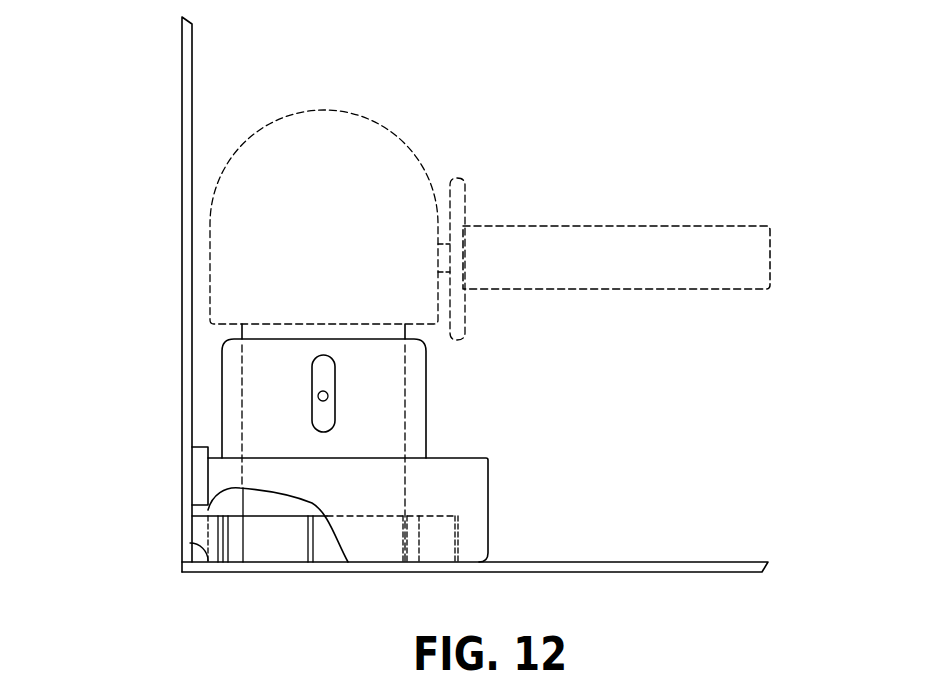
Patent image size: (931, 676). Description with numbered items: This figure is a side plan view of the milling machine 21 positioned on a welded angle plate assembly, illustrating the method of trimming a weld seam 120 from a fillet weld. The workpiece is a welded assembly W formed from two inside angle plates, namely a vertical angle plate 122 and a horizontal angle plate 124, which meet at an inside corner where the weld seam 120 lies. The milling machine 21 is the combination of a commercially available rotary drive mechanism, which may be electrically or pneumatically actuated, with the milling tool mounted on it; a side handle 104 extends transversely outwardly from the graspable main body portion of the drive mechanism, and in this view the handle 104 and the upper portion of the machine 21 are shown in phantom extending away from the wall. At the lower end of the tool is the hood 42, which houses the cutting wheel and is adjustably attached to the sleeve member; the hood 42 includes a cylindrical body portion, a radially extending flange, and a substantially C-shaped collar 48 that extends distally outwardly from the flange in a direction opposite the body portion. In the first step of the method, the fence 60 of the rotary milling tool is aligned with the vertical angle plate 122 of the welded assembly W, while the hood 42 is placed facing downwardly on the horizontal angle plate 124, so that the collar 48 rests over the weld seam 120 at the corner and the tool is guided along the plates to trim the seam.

The welded assembly W is at (415, 287).
The milling machine 21 is at (560, 172).
The hood 42 is at (482, 424).
The C-shaped collar 48 is at (490, 500).
The fence 60 is at (202, 445).
The side handle 104 is at (730, 222).
The weld seam 120 is at (185, 550).
The vertical angle plate 122 is at (180, 213).
The horizontal angle plate 124 is at (670, 558).